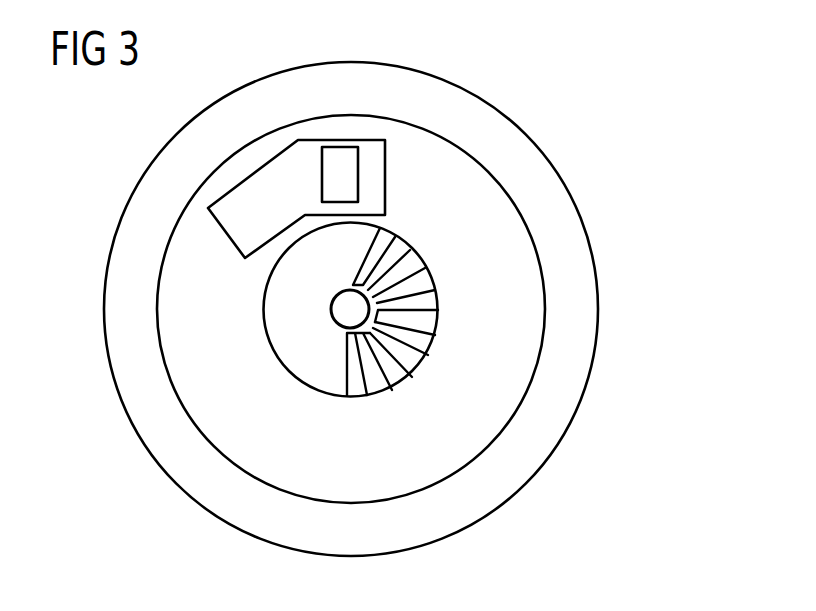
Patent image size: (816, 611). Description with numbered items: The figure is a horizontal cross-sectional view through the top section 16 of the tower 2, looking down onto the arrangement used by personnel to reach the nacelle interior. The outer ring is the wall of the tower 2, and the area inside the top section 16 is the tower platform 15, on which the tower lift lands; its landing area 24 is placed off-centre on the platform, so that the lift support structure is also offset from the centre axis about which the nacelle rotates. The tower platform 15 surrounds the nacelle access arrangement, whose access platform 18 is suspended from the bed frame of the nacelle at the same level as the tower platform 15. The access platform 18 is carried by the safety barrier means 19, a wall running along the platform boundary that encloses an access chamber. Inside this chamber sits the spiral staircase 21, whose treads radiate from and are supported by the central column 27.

The tower 2 is at (598, 320).
The tower platform 15 is at (390, 455).
The top section 16 is at (617, 222).
The access platform 18 is at (291, 330).
The safety barrier means 19 is at (341, 333).
The spiral staircase 21 is at (410, 337).
The landing area 24 is at (262, 165).
The central column 27 is at (347, 315).